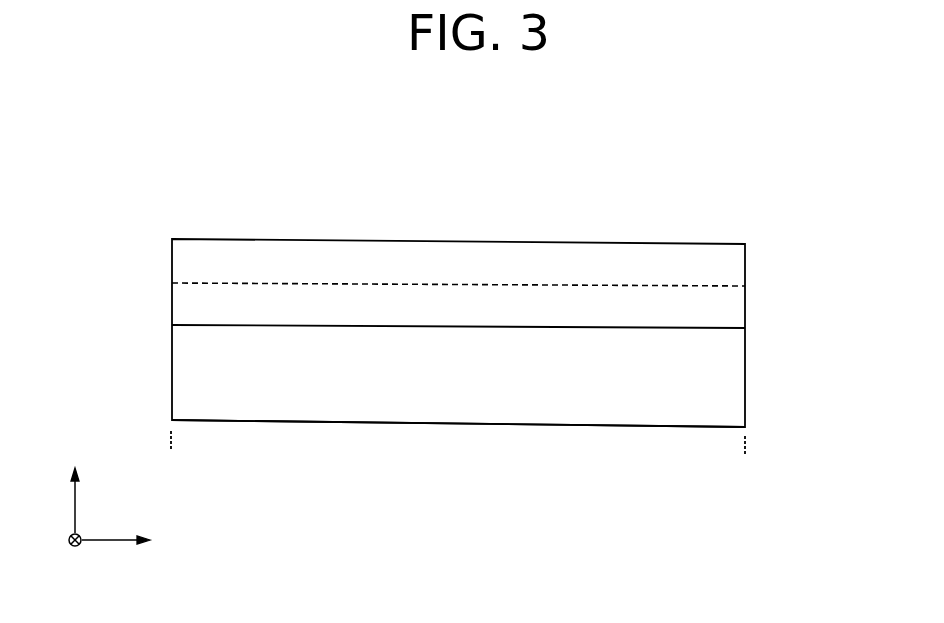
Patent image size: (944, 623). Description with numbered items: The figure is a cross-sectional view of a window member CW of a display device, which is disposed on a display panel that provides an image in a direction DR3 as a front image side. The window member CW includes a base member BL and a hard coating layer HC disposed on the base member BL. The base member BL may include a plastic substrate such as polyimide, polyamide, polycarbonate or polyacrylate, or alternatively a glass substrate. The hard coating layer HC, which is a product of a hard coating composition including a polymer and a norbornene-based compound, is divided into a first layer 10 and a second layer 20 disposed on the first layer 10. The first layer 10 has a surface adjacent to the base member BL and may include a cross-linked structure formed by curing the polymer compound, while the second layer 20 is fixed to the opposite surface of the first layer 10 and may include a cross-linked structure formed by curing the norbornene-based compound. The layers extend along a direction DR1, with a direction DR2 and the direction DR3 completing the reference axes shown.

The window member CW is at (155, 205).
The second layer 20 is at (739, 262).
The first layer 10 is at (739, 302).
The hard coating layer HC is at (814, 250).
The base member BL is at (739, 378).
The direction DR1 is at (137, 540).
The direction DR2 is at (63, 560).
The direction DR3 is at (76, 484).